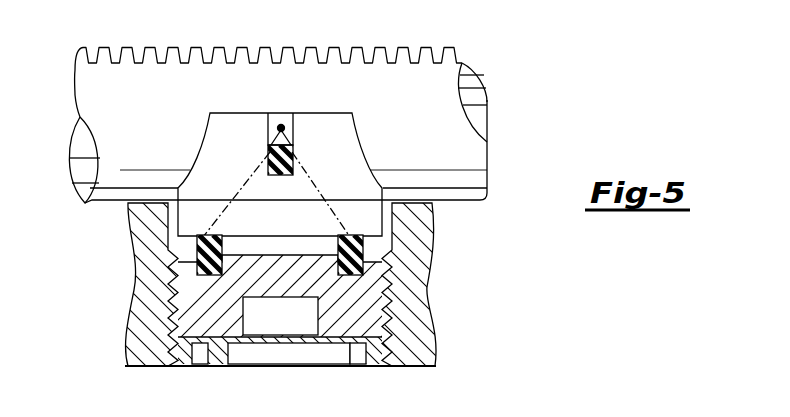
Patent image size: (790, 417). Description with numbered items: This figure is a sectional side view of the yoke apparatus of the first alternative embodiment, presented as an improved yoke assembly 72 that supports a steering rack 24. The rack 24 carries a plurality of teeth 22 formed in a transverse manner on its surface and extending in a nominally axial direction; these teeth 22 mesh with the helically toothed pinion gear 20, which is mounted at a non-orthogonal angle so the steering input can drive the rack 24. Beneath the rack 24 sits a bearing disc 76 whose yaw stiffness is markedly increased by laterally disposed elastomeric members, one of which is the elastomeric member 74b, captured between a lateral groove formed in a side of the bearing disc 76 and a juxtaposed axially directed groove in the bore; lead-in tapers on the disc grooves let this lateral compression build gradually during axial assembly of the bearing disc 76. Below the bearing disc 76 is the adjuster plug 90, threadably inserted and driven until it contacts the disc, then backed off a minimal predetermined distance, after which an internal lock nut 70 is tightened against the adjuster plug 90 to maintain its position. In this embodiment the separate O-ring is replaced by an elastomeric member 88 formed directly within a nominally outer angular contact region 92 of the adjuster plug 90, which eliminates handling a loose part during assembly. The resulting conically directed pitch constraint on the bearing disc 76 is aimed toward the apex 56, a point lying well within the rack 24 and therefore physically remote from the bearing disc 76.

The pinion gear 20 is at (625, 413).
The teeth 22 is at (281, 47).
The rack 24 is at (75, 93).
The apex 56 is at (281, 125).
The internal lock nut 70 is at (343, 366).
The improved yoke assembly 72 is at (450, 262).
The laterally disposed elastomeric member 74b is at (293, 150).
The bearing disc 76 is at (217, 128).
The elastomeric member 88 is at (197, 268).
The adjuster plug 90 is at (173, 318).
The outer angular contact region 92 is at (380, 275).